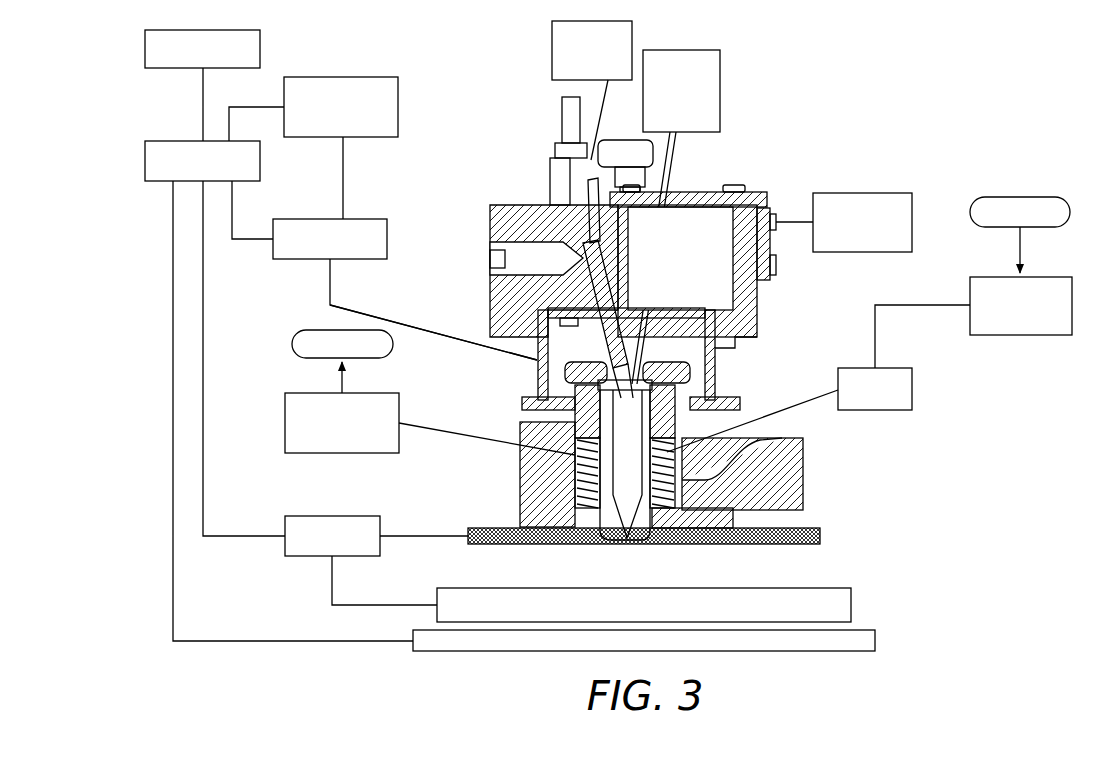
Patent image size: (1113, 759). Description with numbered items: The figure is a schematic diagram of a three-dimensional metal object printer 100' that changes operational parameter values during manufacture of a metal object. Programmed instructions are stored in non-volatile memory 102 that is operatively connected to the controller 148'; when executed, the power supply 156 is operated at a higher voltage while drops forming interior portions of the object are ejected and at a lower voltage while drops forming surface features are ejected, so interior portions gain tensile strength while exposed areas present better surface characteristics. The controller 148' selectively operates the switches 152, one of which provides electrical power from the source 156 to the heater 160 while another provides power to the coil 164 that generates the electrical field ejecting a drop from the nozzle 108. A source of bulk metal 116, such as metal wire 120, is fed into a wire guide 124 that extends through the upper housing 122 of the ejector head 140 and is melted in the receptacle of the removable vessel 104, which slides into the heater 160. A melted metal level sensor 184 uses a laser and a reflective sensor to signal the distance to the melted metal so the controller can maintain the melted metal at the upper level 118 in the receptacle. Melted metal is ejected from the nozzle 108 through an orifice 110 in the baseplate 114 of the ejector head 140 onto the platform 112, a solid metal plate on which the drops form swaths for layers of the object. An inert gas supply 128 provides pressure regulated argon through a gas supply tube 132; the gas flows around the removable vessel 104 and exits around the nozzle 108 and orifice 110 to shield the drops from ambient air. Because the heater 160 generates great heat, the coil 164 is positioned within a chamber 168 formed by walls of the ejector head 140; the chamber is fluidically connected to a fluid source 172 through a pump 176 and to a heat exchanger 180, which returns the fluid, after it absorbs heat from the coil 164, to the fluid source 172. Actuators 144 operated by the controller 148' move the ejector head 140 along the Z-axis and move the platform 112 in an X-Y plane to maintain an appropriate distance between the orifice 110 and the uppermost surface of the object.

The non-volatile memory 102 is at (260, 50).
The electrical power source 156 is at (398, 108).
The controller 148' is at (171, 161).
The switches 152 is at (387, 240).
The ejector head 140 is at (438, 319).
The heat exchanger 180 is at (343, 453).
The actuators 144 is at (378, 556).
The platform 112 is at (851, 600).
The baseplate 114 is at (875, 638).
The source of bulk metal 116 is at (550, 53).
The melted metal level sensor 184 is at (720, 73).
The upper housing 122 is at (515, 205).
The gas supply tube 132 is at (793, 218).
The inert gas supply 128 is at (863, 193).
The 3D metal object printer 100' is at (889, 88).
The wire guide 124 is at (585, 333).
The metal wire 120 is at (600, 382).
The upper level 118 is at (618, 418).
The chamber 168 is at (573, 445).
The removable vessel 104 is at (630, 457).
The heater 160 is at (652, 437).
The coil 164 is at (750, 440).
The pump 176 is at (912, 390).
The fluid source 172 is at (1018, 335).
The orifice 110 is at (602, 536).
The nozzle 108 is at (626, 520).